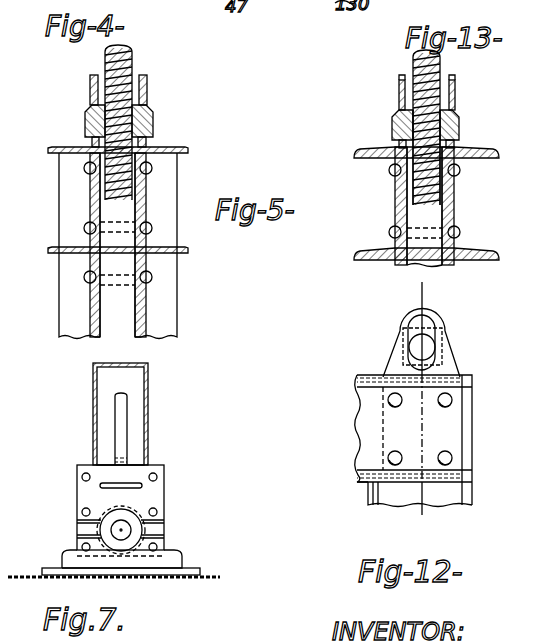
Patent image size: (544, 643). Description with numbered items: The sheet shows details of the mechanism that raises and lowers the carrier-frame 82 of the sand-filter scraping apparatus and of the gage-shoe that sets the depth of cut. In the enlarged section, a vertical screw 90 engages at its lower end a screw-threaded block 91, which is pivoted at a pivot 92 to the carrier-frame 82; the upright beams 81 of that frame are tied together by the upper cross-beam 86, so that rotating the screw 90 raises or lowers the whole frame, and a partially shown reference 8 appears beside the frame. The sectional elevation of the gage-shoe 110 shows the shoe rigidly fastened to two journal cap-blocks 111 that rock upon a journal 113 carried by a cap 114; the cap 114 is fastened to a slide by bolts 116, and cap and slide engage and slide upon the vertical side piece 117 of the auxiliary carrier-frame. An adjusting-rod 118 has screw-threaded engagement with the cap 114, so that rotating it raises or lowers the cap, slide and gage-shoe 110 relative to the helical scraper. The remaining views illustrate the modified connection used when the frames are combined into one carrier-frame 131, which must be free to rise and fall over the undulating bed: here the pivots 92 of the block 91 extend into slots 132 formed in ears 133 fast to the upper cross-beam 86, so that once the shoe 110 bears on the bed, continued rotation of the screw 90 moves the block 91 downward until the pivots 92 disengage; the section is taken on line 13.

In FIG. 5, the vertical screw 90 is at (133, 56).
In FIG. 13, the vertical screw 90 is at (426, 127).
In FIG. 5, the screw-threaded block 91 is at (146, 104).
In FIG. 13, the screw-threaded block 91 is at (450, 108).
In FIG. 12, the screw-threaded block 91 is at (415, 342).
In FIG. 5, the pivot 92 is at (85, 116).
In FIG. 13, the pivot 92 is at (459, 126).
In FIG. 12, the pivot 92 is at (415, 353).
In FIG. 5, the upper cross-beam 86 is at (48, 150).
In FIG. 13, the upper cross-beam 86 is at (426, 203).
In FIG. 12, the upper cross-beam 86 is at (360, 440).
In FIG. 5, the carrier-frame 82 is at (98, 246).
In FIG. 5, the frame member 8 is at (10, 232).
In FIG. 5, the upright beam 81 is at (67, 278).
In FIG. 13, the upright beam 81 is at (424, 207).
In FIG. 5, the gage-shoe 110 is at (19, 327).
In FIG. 7, the gage-shoe 110 is at (188, 581).
In FIG. 7, the vertical side piece 117 is at (138, 390).
In FIG. 7, the adjusting-rod 118 is at (121, 426).
In FIG. 7, the bolt 116 is at (157, 477).
In FIG. 7, the cap 114 is at (152, 500).
In FIG. 7, the journal 113 is at (124, 530).
In FIG. 7, the journal cap-block 111 is at (175, 557).
In FIG. 13, the slot 132 is at (399, 95).
In FIG. 12, the slot 132 is at (432, 325).
In FIG. 13, the ear 133 is at (402, 78).
In FIG. 12, the ear 133 is at (462, 352).
In FIG. 12, the carrier-frame 131 is at (455, 505).
In FIG. 12, the section line 13 is at (429, 410).